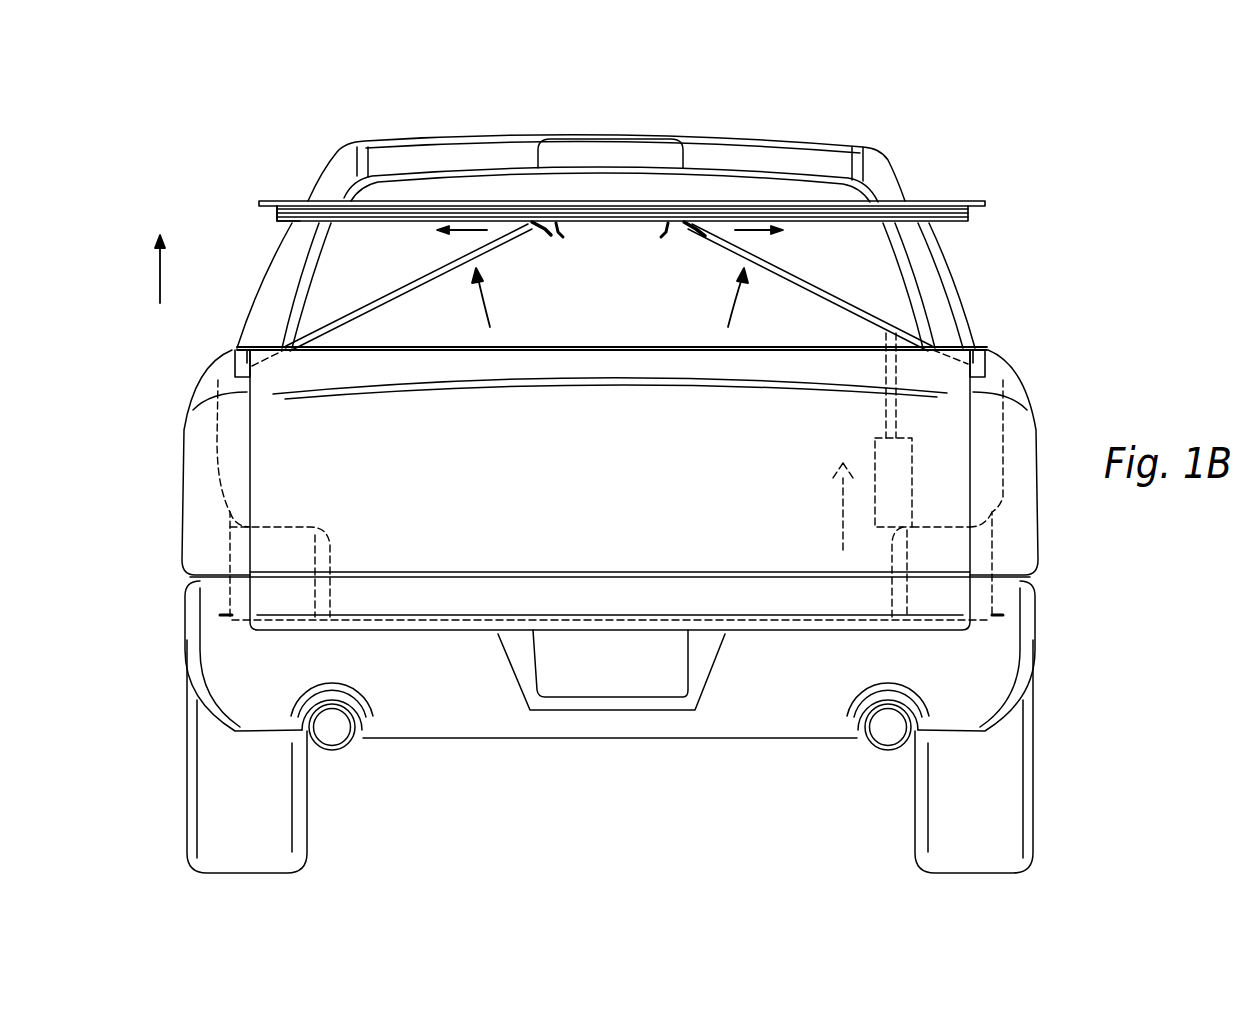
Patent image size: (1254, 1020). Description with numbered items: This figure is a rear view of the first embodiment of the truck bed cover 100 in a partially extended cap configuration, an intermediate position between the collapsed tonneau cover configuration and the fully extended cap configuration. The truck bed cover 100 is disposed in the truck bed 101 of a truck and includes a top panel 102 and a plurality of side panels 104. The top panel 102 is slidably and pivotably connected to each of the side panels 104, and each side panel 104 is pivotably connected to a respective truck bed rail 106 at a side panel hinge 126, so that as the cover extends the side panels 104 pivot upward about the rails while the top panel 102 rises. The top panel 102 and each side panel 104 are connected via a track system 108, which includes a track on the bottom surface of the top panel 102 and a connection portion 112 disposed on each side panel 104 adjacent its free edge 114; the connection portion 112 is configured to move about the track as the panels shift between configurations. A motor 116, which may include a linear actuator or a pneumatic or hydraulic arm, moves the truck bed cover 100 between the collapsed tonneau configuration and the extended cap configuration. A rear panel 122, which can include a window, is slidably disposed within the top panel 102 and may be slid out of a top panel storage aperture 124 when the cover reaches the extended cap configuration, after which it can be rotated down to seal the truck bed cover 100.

The truck bed cover 100 is at (1080, 124).
The truck bed 101 is at (1040, 548).
The top panel 102 is at (617, 203).
The side panels 104 is at (363, 313).
The truck bed rail 106 is at (983, 333).
The track system 108 is at (575, 222).
The connection portion 112 is at (537, 222).
The free edge 114 is at (527, 224).
The motor 116 is at (877, 463).
The rear panel 122 is at (277, 221).
The top panel storage aperture 124 is at (765, 222).
The side panel hinge 126 is at (228, 372).